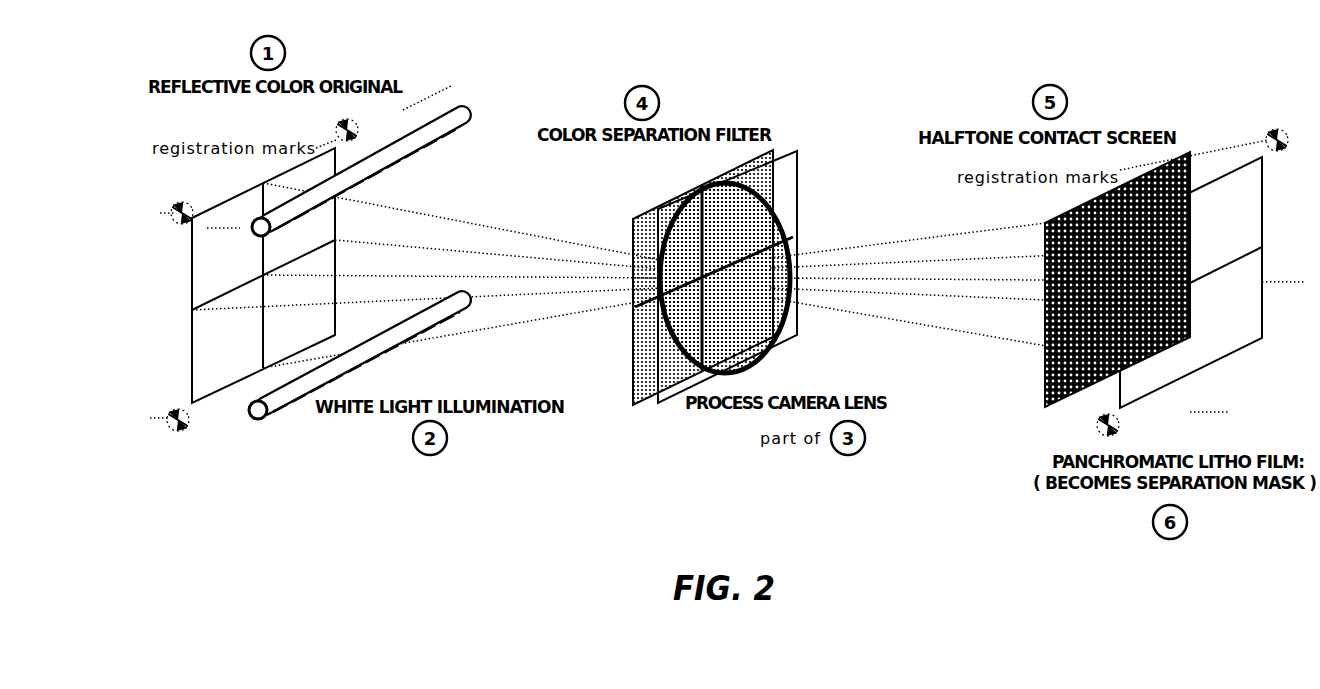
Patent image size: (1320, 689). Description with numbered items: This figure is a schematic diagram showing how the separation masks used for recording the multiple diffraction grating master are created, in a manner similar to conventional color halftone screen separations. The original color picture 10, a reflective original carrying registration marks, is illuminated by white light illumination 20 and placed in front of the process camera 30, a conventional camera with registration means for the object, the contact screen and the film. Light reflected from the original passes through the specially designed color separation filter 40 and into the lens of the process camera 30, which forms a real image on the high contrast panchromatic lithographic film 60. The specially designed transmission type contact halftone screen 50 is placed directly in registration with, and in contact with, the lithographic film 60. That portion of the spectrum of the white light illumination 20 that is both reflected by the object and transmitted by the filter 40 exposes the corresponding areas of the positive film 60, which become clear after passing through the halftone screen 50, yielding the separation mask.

The original color picture 10 is at (192, 298).
The white light illumination 20 is at (284, 407).
The process camera 30 is at (797, 215).
The color separation filter 40 is at (649, 211).
The transmission type contact halftone screen 50 is at (1045, 381).
The high contrast panchromatic lithographic film 60 is at (1226, 354).